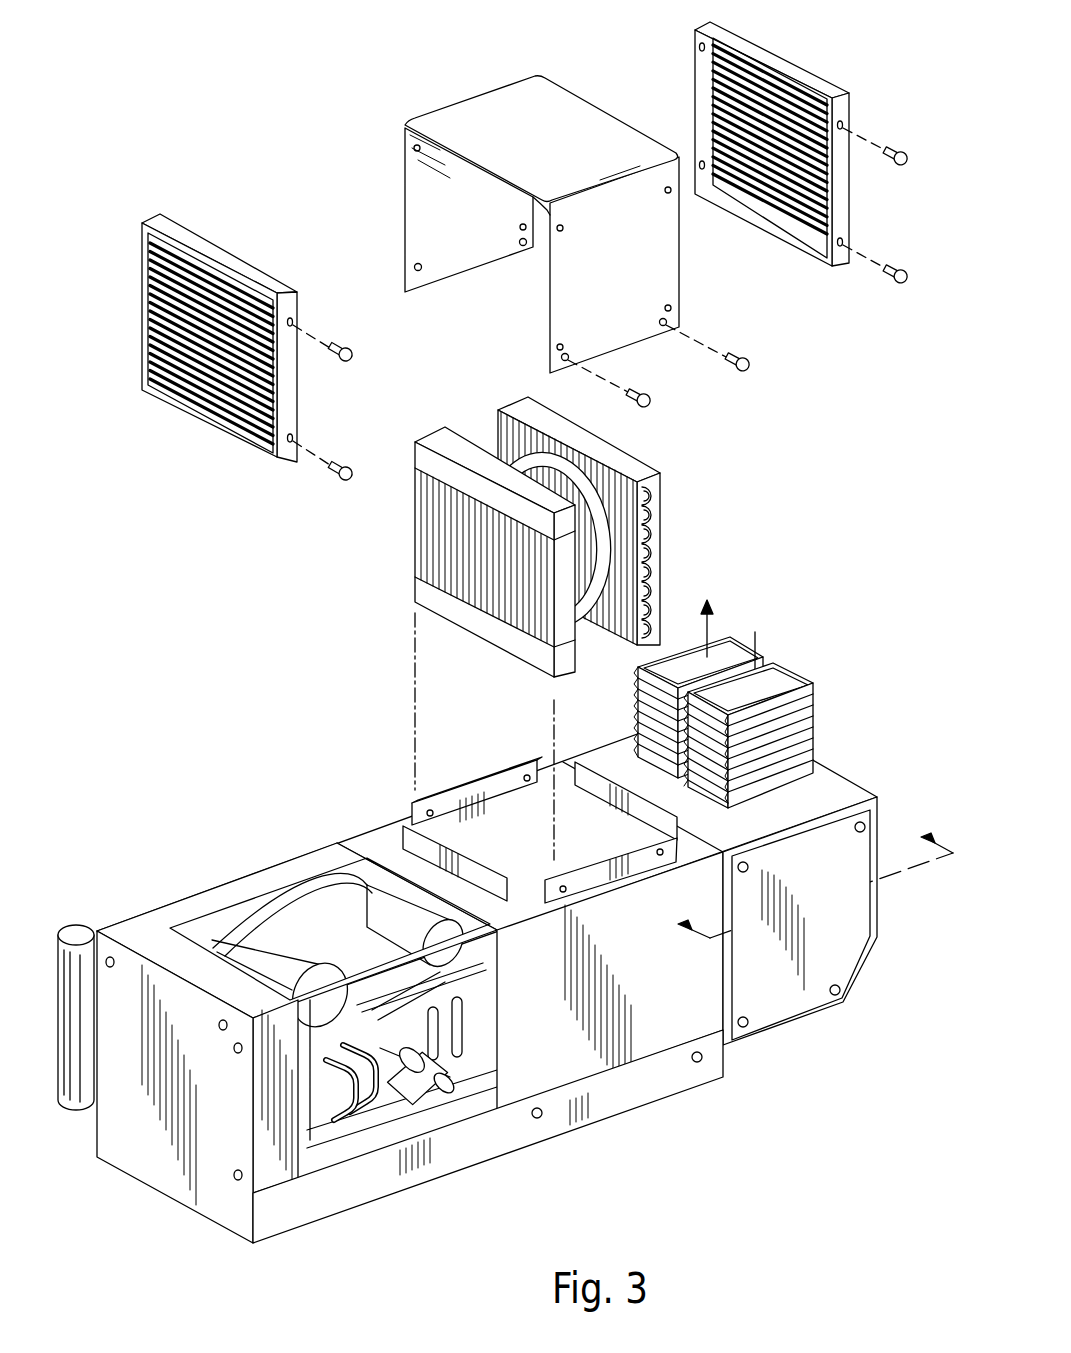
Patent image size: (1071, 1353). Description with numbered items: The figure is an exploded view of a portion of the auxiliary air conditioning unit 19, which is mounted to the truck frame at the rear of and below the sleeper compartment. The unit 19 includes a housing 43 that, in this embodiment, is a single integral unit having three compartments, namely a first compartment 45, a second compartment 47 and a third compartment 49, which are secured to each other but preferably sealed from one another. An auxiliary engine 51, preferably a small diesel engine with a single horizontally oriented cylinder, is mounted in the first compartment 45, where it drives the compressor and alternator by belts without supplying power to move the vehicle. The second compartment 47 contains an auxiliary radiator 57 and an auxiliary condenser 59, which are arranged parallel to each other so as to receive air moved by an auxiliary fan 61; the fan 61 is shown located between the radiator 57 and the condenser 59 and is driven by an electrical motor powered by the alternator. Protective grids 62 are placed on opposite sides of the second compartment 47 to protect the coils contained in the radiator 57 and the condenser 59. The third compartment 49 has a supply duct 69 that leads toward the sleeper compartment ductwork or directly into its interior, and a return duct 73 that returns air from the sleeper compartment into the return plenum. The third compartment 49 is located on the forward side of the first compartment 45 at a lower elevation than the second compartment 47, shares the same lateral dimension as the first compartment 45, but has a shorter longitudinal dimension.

The auxiliary air conditioning unit 19 is at (805, 626).
The housing 43 is at (163, 889).
The first compartment 45 is at (318, 1157).
The second compartment 47 is at (680, 305).
The third compartment 49 is at (850, 910).
The auxiliary engine 51 is at (448, 1097).
The auxiliary radiator 57 is at (410, 537).
The auxiliary condenser 59 is at (663, 525).
The auxiliary fan 61 is at (600, 558).
The protective grids 62 is at (300, 403).
The supply duct 69 is at (717, 632).
The return duct 73 is at (817, 707).